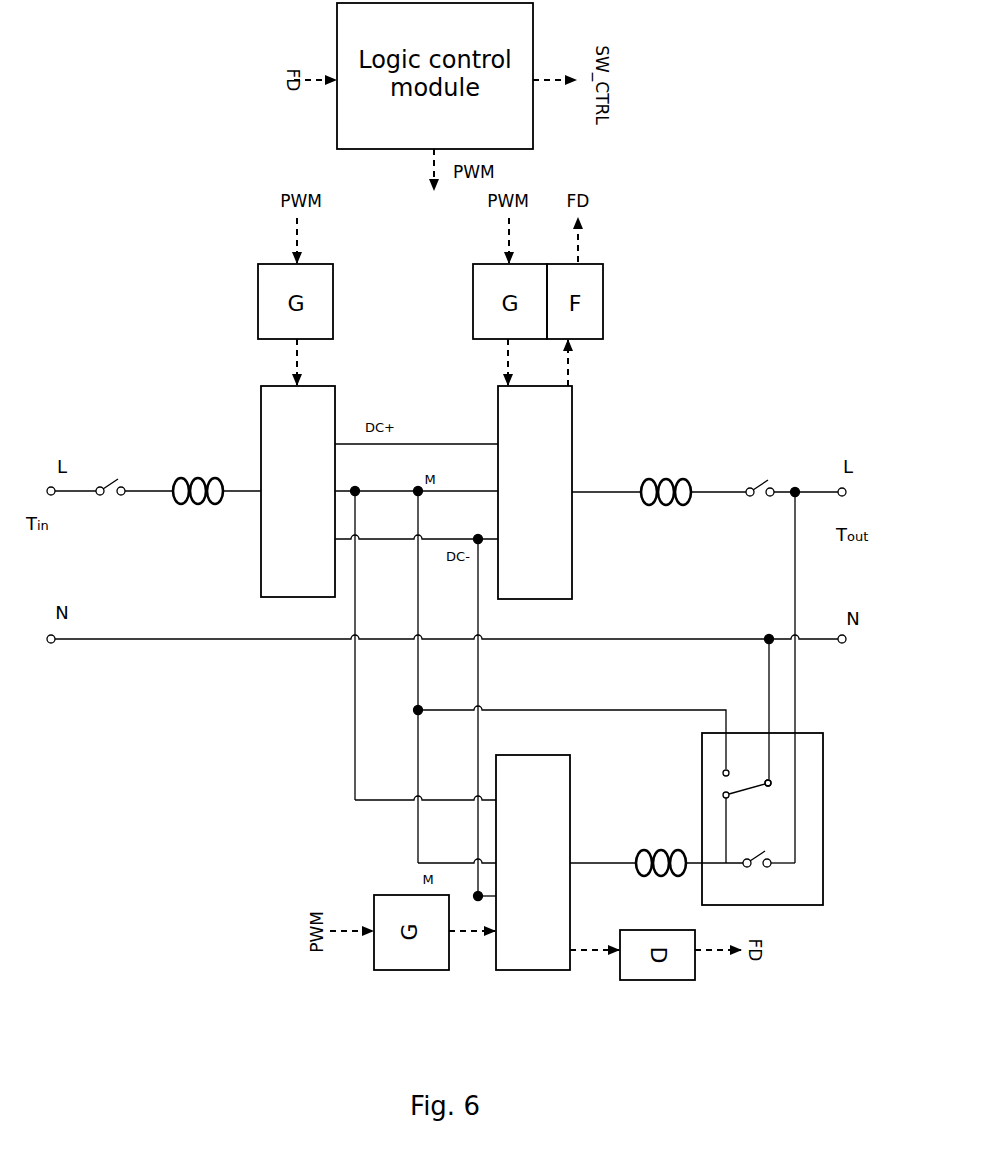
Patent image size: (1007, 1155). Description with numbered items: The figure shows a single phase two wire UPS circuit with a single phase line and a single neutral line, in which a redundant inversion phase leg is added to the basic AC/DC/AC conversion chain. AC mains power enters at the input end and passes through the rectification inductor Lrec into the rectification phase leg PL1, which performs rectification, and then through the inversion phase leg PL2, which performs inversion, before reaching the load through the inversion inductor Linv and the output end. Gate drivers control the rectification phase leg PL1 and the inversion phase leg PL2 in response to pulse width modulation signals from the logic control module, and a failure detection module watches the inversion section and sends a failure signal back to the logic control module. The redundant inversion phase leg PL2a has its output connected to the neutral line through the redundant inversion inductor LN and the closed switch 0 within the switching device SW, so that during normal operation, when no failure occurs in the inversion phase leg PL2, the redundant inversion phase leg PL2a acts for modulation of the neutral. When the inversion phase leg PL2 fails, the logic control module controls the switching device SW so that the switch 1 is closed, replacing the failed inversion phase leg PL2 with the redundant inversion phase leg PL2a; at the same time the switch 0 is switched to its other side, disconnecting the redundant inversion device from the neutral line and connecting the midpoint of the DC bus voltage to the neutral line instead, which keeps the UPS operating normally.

The switch 0 is at (761, 774).
The switch 1 is at (775, 850).
The rectification phase leg PL1 is at (298, 491).
The inversion phase leg PL2 is at (535, 492).
The redundant inversion phase leg PL2a is at (533, 862).
The switching device SW is at (762, 819).
The rectification inductor Lrec is at (198, 511).
The inversion inductor Linv is at (666, 512).
The redundant inversion inductor LN is at (661, 847).